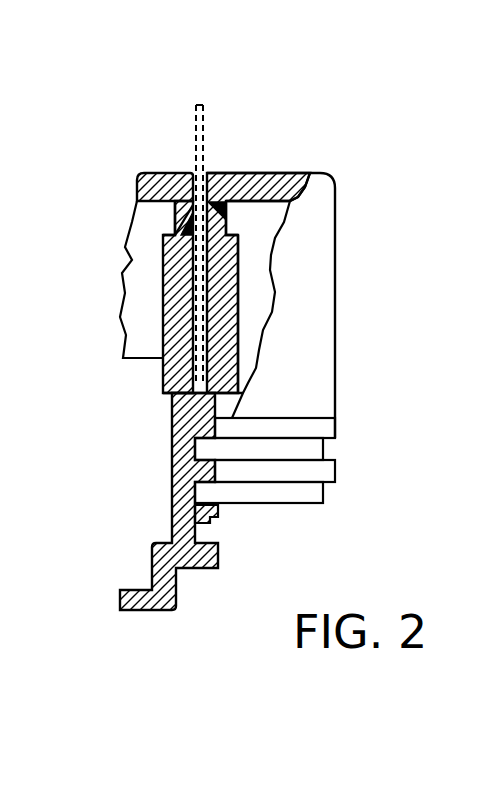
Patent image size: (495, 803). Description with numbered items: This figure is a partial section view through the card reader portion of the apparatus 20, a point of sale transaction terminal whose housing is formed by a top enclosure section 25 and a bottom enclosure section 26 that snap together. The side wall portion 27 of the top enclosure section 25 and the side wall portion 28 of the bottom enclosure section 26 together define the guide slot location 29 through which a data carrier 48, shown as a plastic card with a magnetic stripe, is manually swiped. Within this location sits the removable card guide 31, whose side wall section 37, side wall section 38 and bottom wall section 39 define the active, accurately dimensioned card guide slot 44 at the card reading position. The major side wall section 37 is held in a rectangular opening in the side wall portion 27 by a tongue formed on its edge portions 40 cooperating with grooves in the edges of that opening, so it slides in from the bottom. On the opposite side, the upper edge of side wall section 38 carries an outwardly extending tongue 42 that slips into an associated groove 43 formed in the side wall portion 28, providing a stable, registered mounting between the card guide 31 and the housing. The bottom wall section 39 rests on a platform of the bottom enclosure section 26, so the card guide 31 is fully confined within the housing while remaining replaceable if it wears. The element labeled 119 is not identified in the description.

The apparatus 20 is at (343, 293).
The top enclosure section 25 is at (167, 163).
The bottom enclosure section 26 is at (215, 512).
The side wall portion 27 is at (140, 176).
The side wall portion 28 is at (283, 173).
The guide slot location 29 is at (208, 172).
The card guide 31 is at (172, 354).
The side wall section 37 is at (163, 292).
The side wall section 38 is at (238, 347).
The bottom wall section 39 is at (163, 384).
The edge portions 40 is at (160, 220).
The tongue 42 is at (226, 216).
The groove 43 is at (290, 201).
The card guide slot 44 is at (238, 303).
The data carrier 48 is at (200, 108).
The lower stem 119 is at (172, 441).